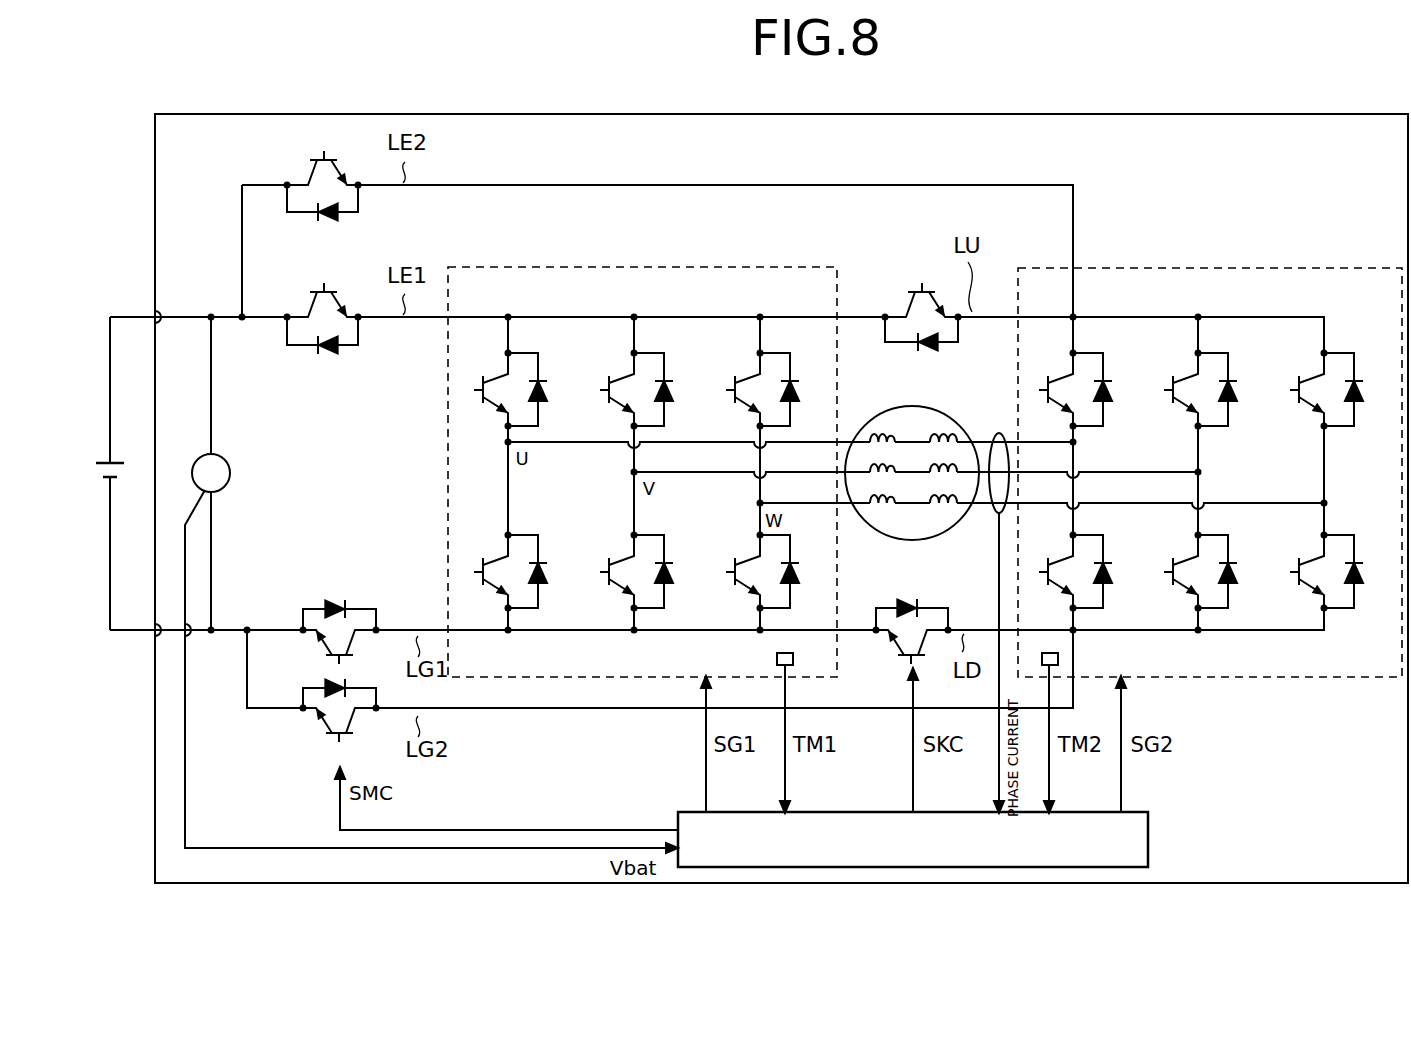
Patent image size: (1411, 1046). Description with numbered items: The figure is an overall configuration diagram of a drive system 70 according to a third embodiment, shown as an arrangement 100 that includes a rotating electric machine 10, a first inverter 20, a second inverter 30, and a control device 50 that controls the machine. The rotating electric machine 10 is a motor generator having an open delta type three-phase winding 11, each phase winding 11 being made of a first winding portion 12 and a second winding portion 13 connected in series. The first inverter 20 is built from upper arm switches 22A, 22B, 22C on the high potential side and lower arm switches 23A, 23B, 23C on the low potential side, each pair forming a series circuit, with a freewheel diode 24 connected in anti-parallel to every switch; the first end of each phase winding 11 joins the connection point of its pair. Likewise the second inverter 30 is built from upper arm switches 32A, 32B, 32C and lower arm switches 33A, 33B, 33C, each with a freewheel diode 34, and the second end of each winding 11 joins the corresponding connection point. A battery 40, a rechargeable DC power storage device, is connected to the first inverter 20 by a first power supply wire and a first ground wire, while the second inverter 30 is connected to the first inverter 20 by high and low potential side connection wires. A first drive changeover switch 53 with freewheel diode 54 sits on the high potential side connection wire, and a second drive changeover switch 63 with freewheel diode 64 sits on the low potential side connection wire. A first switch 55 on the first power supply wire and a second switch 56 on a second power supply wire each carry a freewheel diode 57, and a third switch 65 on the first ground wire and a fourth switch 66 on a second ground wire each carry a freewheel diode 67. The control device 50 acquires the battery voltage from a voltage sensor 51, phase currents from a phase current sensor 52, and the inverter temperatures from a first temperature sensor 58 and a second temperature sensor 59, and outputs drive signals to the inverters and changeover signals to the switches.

The power conversion system 100 is at (1316, 105).
The drive system 70 is at (1193, 113).
The first inverter 20 is at (780, 266).
The second inverter 30 is at (1333, 267).
The rotating electric machine 10 is at (880, 540).
The winding 11 is at (878, 432).
The first winding portion 12 is at (893, 432).
The second winding portion 13 is at (955, 437).
The upper arm switch 22A is at (503, 382).
The upper arm switch 22B is at (629, 382).
The upper arm switch 22C is at (755, 382).
The lower arm switch 23A is at (503, 562).
The lower arm switch 23B is at (629, 562).
The lower arm switch 23C is at (755, 562).
The freewheel diode 24 is at (808, 590).
The upper arm switch 32A is at (1068, 382).
The upper arm switch 32B is at (1193, 382).
The upper arm switch 32C is at (1319, 382).
The lower arm switch 33A is at (1068, 562).
The lower arm switch 33B is at (1193, 562).
The lower arm switch 33C is at (1319, 562).
The freewheel diode 34 is at (1372, 590).
The battery 40 is at (100, 453).
The control device 50 is at (1150, 840).
The voltage sensor 51 is at (228, 457).
The phase current sensor 52 is at (995, 515).
The first drive changeover switch 53 is at (910, 308).
The freewheel diode 54 is at (944, 346).
The first switch 55 is at (314, 310).
The second switch 56 is at (312, 175).
The freewheel diode 57 is at (332, 220).
The first temperature sensor 58 is at (777, 659).
The second temperature sensor 59 is at (1042, 660).
The second drive changeover switch 63 is at (906, 652).
The freewheel diode 64 is at (920, 610).
The third switch 65 is at (314, 648).
The fourth switch 66 is at (322, 722).
The freewheel diode 67 is at (346, 609).